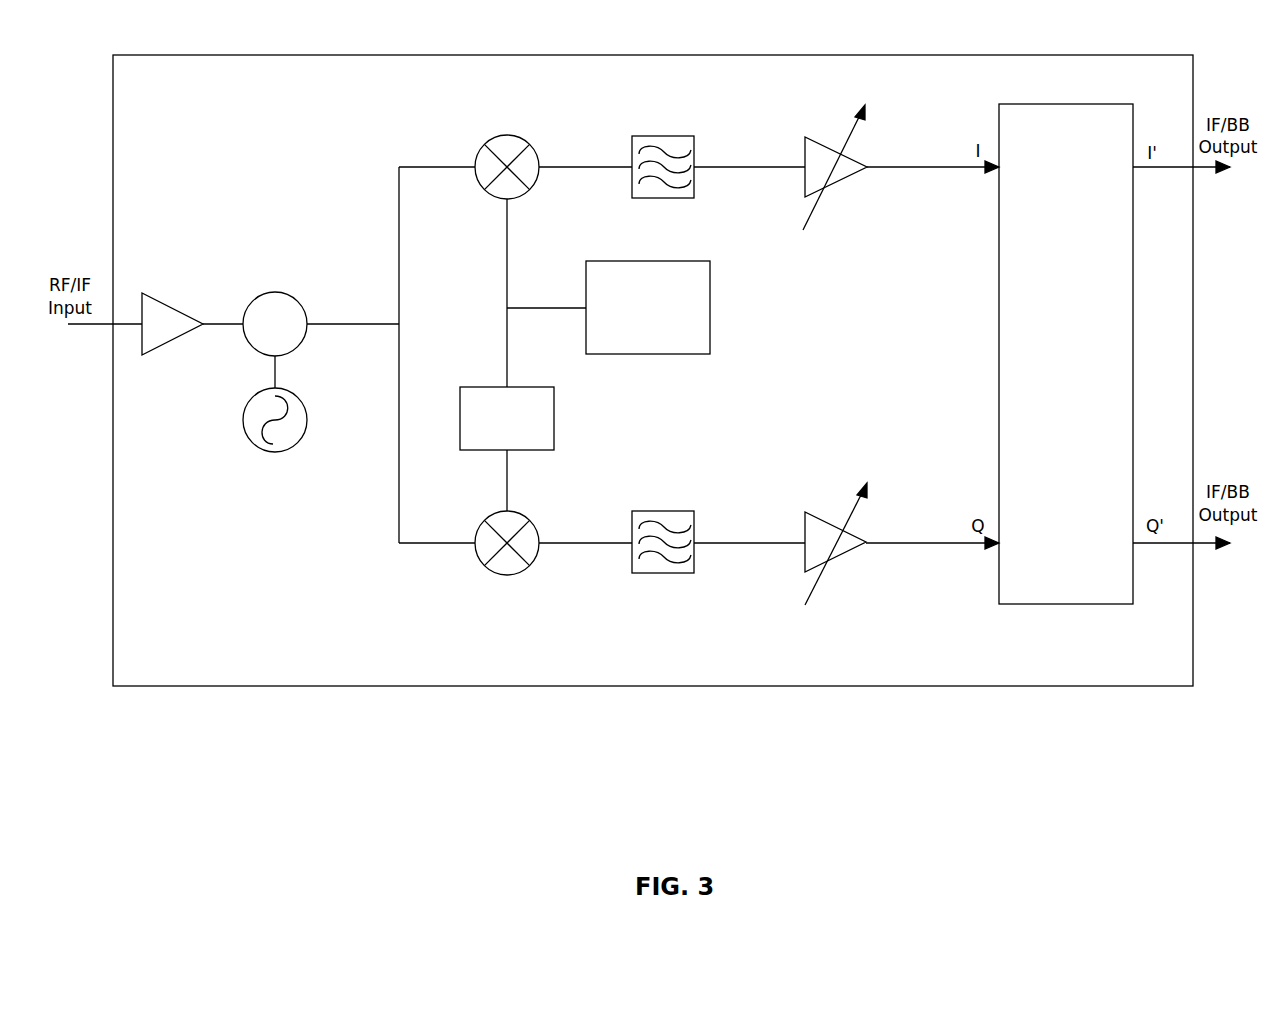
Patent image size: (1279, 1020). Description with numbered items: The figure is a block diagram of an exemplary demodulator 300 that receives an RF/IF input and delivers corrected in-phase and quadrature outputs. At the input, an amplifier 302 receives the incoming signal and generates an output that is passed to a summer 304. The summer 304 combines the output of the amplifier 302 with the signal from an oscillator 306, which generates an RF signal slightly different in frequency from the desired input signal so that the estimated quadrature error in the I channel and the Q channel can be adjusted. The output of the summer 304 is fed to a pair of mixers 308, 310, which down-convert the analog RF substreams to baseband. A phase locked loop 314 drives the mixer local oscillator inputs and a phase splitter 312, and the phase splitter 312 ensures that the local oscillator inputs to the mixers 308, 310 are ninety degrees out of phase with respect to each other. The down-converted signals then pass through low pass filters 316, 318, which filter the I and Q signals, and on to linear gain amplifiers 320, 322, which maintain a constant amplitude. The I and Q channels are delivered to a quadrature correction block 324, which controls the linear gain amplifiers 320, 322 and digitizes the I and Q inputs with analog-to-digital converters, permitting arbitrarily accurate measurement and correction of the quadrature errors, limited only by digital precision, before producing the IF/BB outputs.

The demodulator 300 is at (1030, 55).
The amplifier 302 is at (160, 302).
The summer 304 is at (275, 292).
The oscillator 306 is at (265, 452).
The mixer 308 is at (519, 137).
The mixer 310 is at (520, 573).
The phase splitter 312 is at (554, 430).
The phase locked loop 314 is at (710, 338).
The low pass filter 316 is at (692, 135).
The low pass filter 318 is at (677, 573).
The linear gain amplifier 320 is at (850, 173).
The linear gain amplifier 322 is at (852, 550).
The quadrature correction block 324 is at (1083, 604).